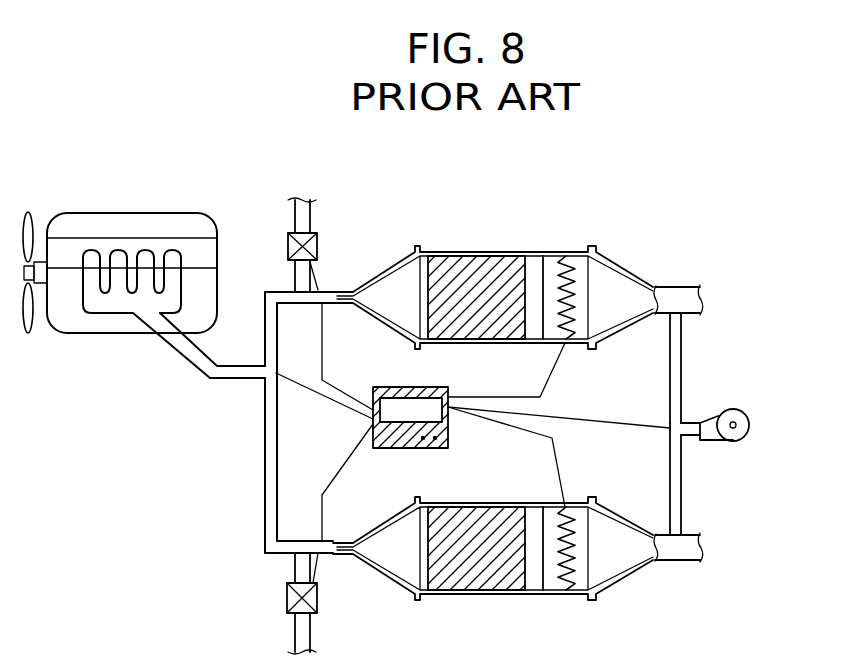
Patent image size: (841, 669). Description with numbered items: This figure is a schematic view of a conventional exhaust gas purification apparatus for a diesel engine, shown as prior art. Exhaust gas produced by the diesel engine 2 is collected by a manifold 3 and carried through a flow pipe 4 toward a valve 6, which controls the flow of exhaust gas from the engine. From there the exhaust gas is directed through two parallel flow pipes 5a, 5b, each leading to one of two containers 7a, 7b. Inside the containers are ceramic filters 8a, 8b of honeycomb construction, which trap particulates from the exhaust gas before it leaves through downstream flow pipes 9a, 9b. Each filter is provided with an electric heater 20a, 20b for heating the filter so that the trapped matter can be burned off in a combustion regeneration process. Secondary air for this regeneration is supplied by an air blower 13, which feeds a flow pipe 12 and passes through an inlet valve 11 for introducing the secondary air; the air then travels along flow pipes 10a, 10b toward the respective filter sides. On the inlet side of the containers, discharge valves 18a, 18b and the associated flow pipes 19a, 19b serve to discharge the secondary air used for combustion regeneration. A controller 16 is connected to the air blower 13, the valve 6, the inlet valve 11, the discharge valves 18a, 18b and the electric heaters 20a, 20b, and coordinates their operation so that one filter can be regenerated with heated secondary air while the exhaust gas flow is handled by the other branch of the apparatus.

The diesel engine 2 is at (110, 222).
The manifold 3 is at (121, 312).
The flow pipe 4 is at (192, 368).
The flow pipe 5a is at (273, 297).
The flow pipe 5b is at (262, 540).
The valve 6 is at (267, 380).
The container 7a is at (420, 248).
The container 7b is at (428, 598).
The ceramic filter 8a is at (500, 256).
The ceramic filter 8b is at (478, 515).
The flow pipe 9a is at (676, 297).
The flow pipe 9b is at (664, 548).
The flow pipe 10a is at (683, 349).
The flow pipe 10b is at (682, 498).
The inlet valve 11 is at (670, 428).
The flow pipe 12 is at (688, 437).
The air blower 13 is at (754, 422).
The controller 16 is at (380, 450).
The discharge valve 18a is at (318, 258).
The discharge valve 18b is at (318, 598).
The flow pipe 19a is at (312, 207).
The flow pipe 19b is at (295, 630).
The electric heater 20a is at (574, 260).
The electric heater 20b is at (572, 582).